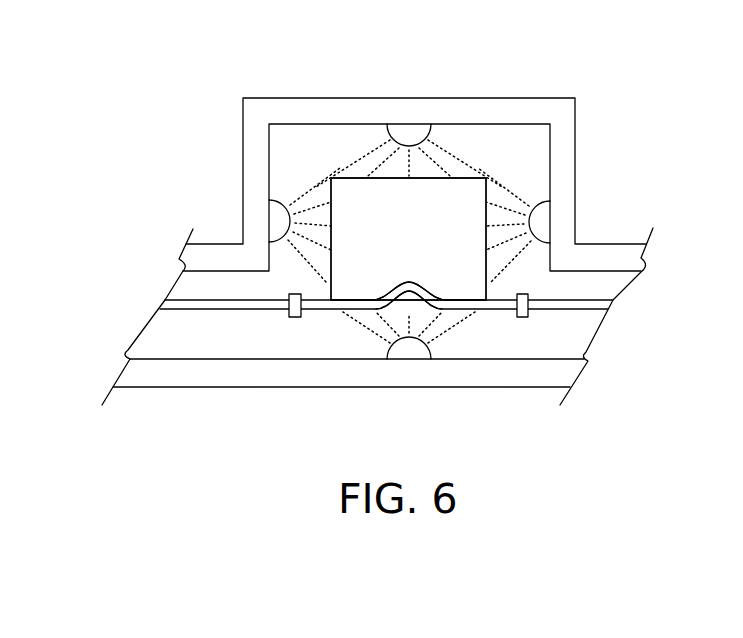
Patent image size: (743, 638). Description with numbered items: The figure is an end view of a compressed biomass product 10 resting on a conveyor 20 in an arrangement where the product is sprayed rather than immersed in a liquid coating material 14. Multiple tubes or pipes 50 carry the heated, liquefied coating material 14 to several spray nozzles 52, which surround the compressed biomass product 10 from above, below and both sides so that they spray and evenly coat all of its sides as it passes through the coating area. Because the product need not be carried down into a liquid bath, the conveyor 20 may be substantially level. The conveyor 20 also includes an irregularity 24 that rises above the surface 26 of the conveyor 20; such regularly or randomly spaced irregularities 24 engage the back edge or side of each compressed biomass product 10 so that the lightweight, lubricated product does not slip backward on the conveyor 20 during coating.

The compressed biomass product 10 is at (468, 193).
The liquid coating material 14 is at (443, 152).
The conveyor 20 is at (611, 299).
The irregularities 24 is at (409, 280).
The surface of the conveyor 26 is at (185, 300).
The tubes or pipes 50 is at (563, 98).
The spray nozzles 52 is at (278, 205).